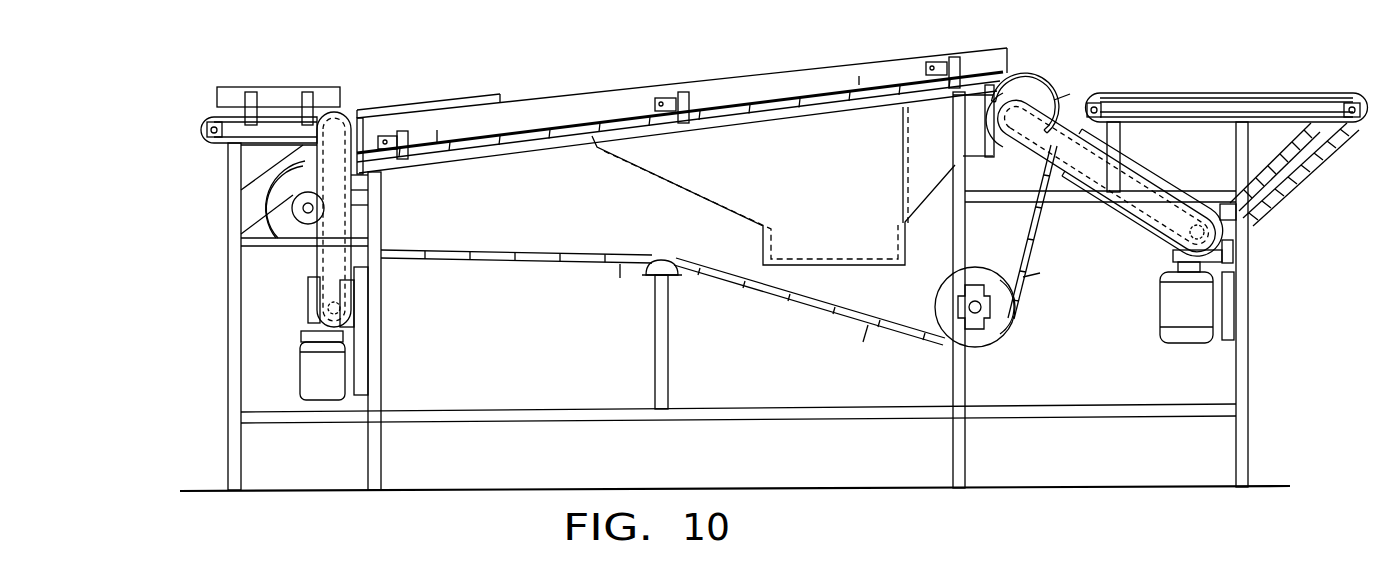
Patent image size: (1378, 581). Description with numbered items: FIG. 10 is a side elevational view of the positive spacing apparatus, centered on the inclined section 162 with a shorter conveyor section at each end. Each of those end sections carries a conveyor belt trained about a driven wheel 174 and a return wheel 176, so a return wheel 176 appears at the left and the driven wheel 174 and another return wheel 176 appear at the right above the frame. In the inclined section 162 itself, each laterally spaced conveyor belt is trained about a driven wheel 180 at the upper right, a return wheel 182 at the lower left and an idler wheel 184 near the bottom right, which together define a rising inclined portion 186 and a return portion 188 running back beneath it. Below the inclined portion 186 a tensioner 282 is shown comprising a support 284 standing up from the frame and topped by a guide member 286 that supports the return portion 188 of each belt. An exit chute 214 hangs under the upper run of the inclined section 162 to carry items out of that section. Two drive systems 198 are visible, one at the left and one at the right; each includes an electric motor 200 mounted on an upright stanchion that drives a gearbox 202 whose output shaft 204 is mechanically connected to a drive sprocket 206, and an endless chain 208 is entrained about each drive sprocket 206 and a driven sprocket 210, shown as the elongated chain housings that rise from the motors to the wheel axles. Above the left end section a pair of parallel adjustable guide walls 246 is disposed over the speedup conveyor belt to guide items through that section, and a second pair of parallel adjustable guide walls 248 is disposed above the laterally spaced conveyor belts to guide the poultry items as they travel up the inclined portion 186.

The inclined section 162 is at (790, 58).
The driven wheel 174 is at (1358, 93).
The return wheel 176 is at (211, 143).
The driven wheel 180 is at (1022, 75).
The return wheel 182 is at (265, 210).
The idler wheel 184 is at (1008, 316).
The inclined portion 186 is at (740, 72).
The return portion 188 is at (728, 292).
The drive system 198 is at (298, 390).
The electric motor 200 is at (300, 338).
The gearbox 202 is at (308, 292).
The output shaft 204 is at (340, 312).
The drive sprocket 206 is at (345, 306).
The endless chain 208 is at (345, 213).
The driven sprocket 210 is at (338, 132).
The exit chute 214 is at (735, 214).
The adjustable guide walls 246 is at (229, 60).
The adjustable guide walls 248 is at (558, 112).
The tensioner 282 is at (636, 254).
The support 284 is at (656, 362).
The guide member 286 is at (680, 255).